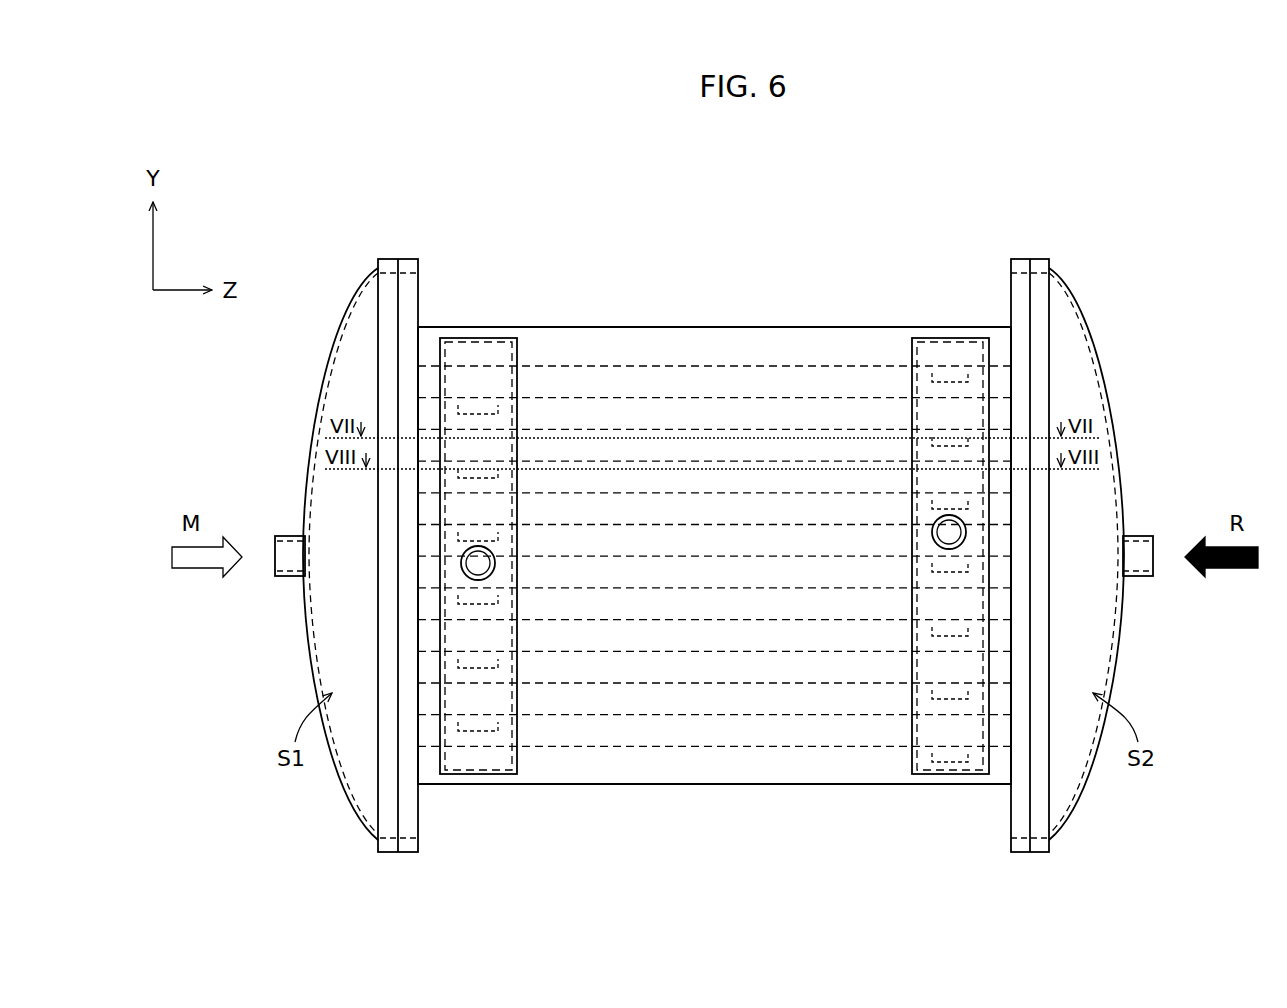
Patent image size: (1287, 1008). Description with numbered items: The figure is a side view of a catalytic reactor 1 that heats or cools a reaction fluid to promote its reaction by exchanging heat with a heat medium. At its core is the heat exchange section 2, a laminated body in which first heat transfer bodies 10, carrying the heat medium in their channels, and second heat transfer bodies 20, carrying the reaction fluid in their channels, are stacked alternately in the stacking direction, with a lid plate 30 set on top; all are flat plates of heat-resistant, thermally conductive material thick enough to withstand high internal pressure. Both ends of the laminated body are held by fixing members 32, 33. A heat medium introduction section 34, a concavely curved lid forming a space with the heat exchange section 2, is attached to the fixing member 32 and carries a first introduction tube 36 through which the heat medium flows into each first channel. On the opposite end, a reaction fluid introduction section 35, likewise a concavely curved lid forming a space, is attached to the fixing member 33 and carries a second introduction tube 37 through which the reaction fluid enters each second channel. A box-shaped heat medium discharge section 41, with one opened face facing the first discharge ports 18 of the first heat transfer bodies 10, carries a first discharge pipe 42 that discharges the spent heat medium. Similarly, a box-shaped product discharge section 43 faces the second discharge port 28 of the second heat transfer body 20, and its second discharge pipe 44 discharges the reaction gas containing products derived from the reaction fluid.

The reactor 1 is at (535, 194).
The heat exchange section 2 is at (716, 325).
The first heat transfer body 10 is at (822, 445).
The first discharge port 18 is at (948, 433).
The second heat transfer body 20 is at (787, 480).
The second discharge port 28 is at (477, 467).
The lid plate 30 is at (657, 345).
The fixing member 32 is at (410, 268).
The fixing member 33 is at (1018, 268).
The heat medium introduction section 34 is at (355, 340).
The reaction fluid introduction section 35 is at (1068, 340).
The first introduction tube 36 is at (290, 535).
The second introduction tube 37 is at (1140, 535).
The heat medium discharge section 41 is at (935, 338).
The first discharge pipe 42 is at (940, 545).
The product discharge section 43 is at (478, 338).
The second discharge pipe 44 is at (487, 580).